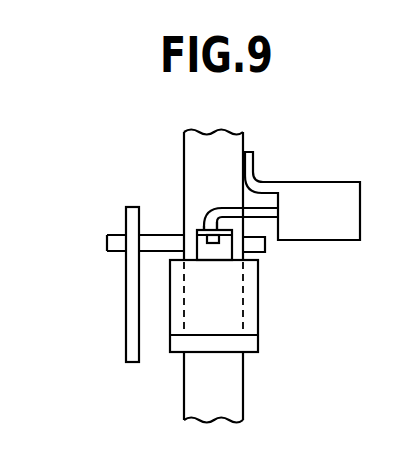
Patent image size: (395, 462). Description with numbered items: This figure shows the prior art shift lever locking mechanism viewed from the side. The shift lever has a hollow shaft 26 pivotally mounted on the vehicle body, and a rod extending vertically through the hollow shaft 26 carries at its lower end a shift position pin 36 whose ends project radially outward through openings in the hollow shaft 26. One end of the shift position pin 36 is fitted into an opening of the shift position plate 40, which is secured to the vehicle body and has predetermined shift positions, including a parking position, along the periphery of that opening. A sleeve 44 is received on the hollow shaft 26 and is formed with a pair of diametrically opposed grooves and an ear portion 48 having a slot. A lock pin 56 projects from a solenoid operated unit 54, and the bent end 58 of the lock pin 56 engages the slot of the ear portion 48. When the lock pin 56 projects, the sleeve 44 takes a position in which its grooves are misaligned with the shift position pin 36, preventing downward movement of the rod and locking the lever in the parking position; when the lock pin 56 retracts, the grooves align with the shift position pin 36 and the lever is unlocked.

The hollow shaft 26 is at (228, 149).
The shift position pin 36 is at (110, 244).
The shift position plate 40 is at (133, 293).
The sleeve 44 is at (177, 317).
The ear portion 48 is at (197, 228).
The solenoid operated unit 54 is at (323, 193).
The lock pin 56 is at (268, 218).
The bent end 58 is at (203, 228).